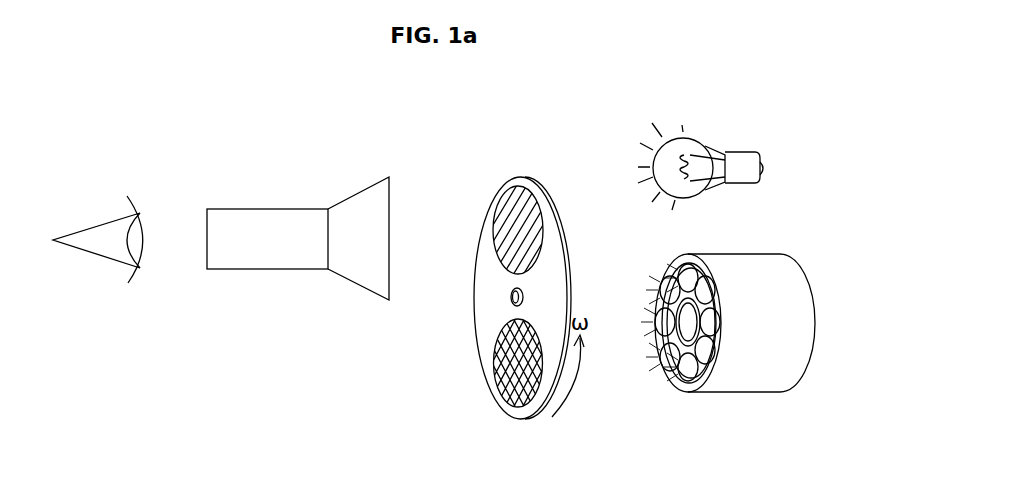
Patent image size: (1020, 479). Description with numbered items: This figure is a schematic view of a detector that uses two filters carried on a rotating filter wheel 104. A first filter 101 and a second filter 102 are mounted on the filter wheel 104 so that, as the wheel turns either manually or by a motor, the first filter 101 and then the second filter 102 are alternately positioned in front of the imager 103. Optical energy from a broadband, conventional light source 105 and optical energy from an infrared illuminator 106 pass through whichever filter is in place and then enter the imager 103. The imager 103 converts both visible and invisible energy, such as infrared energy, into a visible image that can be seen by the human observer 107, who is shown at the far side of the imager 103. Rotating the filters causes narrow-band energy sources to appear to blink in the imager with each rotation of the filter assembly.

The first filter 101 is at (500, 205).
The second filter 102 is at (510, 375).
The imager 103 is at (238, 228).
The filter wheel 104 is at (494, 305).
The broadband light source 105 is at (695, 145).
The infrared illuminator 106 is at (723, 278).
The human observer 107 is at (98, 272).